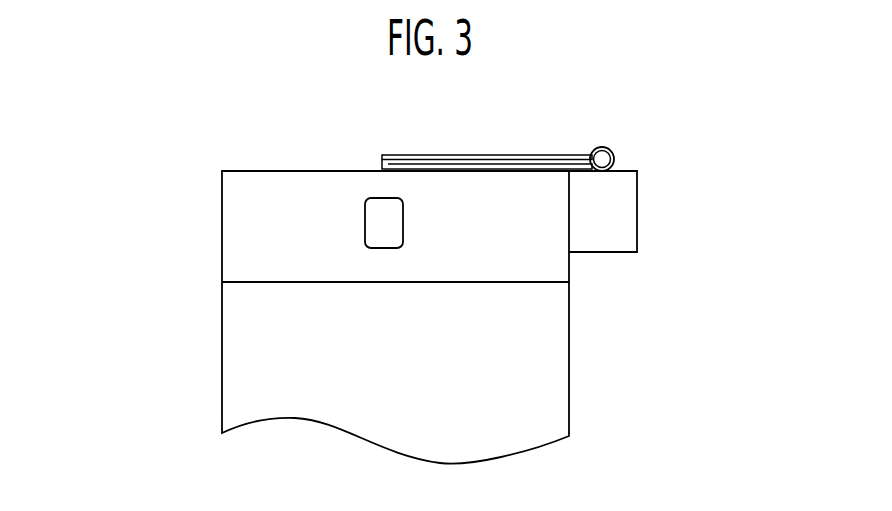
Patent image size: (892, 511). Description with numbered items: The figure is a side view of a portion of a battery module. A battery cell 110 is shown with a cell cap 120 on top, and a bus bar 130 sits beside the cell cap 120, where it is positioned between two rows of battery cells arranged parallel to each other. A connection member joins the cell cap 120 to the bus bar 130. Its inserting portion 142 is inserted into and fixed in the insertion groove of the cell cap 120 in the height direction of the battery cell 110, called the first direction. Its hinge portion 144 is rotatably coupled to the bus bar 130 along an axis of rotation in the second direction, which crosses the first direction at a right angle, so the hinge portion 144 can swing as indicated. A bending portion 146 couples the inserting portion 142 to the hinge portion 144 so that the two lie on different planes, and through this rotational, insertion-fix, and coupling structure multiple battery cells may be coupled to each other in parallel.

The battery cell 110 is at (222, 355).
The cell cap 120 is at (222, 216).
The bus bar 130 is at (637, 212).
The inserting portion 142 is at (381, 170).
The hinge portion 144 is at (638, 133).
The bending portion 146 is at (383, 167).